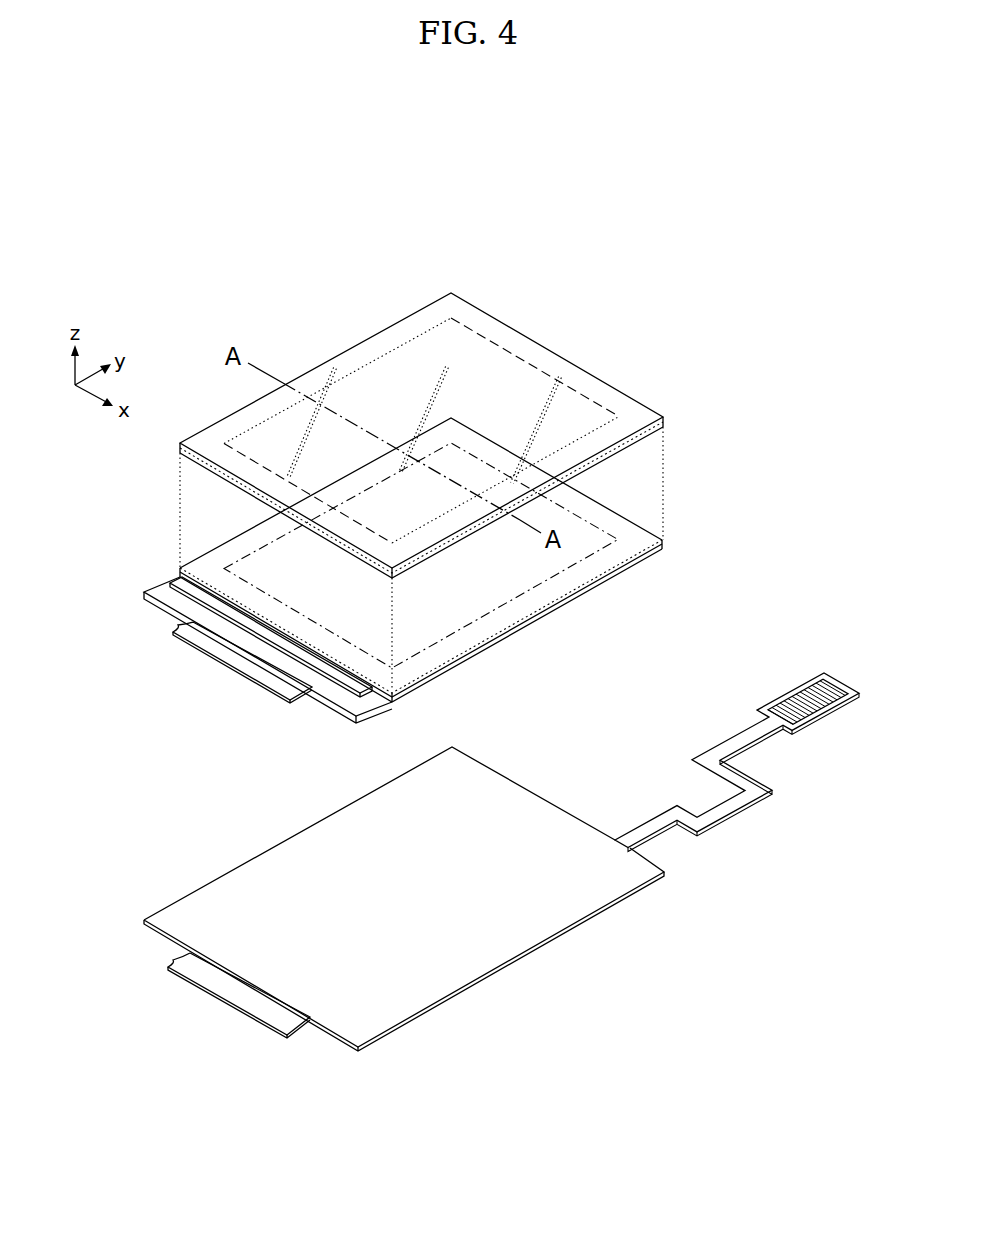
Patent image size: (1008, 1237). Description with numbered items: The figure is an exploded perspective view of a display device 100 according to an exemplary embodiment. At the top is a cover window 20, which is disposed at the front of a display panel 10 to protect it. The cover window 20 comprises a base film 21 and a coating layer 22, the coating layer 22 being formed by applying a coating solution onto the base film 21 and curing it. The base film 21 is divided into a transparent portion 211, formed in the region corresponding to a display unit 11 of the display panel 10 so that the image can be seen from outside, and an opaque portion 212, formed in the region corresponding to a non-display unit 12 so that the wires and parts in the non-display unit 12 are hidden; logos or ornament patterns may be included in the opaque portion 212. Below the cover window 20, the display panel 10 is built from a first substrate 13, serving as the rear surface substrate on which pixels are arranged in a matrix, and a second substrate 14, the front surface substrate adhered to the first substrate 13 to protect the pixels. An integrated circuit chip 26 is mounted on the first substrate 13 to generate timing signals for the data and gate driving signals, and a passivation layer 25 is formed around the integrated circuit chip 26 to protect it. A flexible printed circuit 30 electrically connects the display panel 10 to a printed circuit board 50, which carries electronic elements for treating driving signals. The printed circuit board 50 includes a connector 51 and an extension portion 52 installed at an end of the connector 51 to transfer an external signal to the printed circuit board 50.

The display device 100 is at (308, 200).
The display panel 10 is at (560, 622).
The display unit 11 is at (467, 595).
The non-display unit 12 is at (602, 580).
The first substrate 13 is at (650, 555).
The second substrate 14 is at (642, 527).
The cover window 20 is at (628, 388).
The base film 21 is at (205, 468).
The coating layer 22 is at (230, 484).
The transparent portion 211 is at (470, 348).
The opaque portion 212 is at (536, 356).
The passivation layer 25 is at (172, 600).
The integrated circuit chip 26 is at (177, 580).
The flexible printed circuit 30 is at (240, 667).
The printed circuit board 50 is at (530, 927).
The connector 51 is at (806, 690).
The extension portion 52 is at (752, 790).